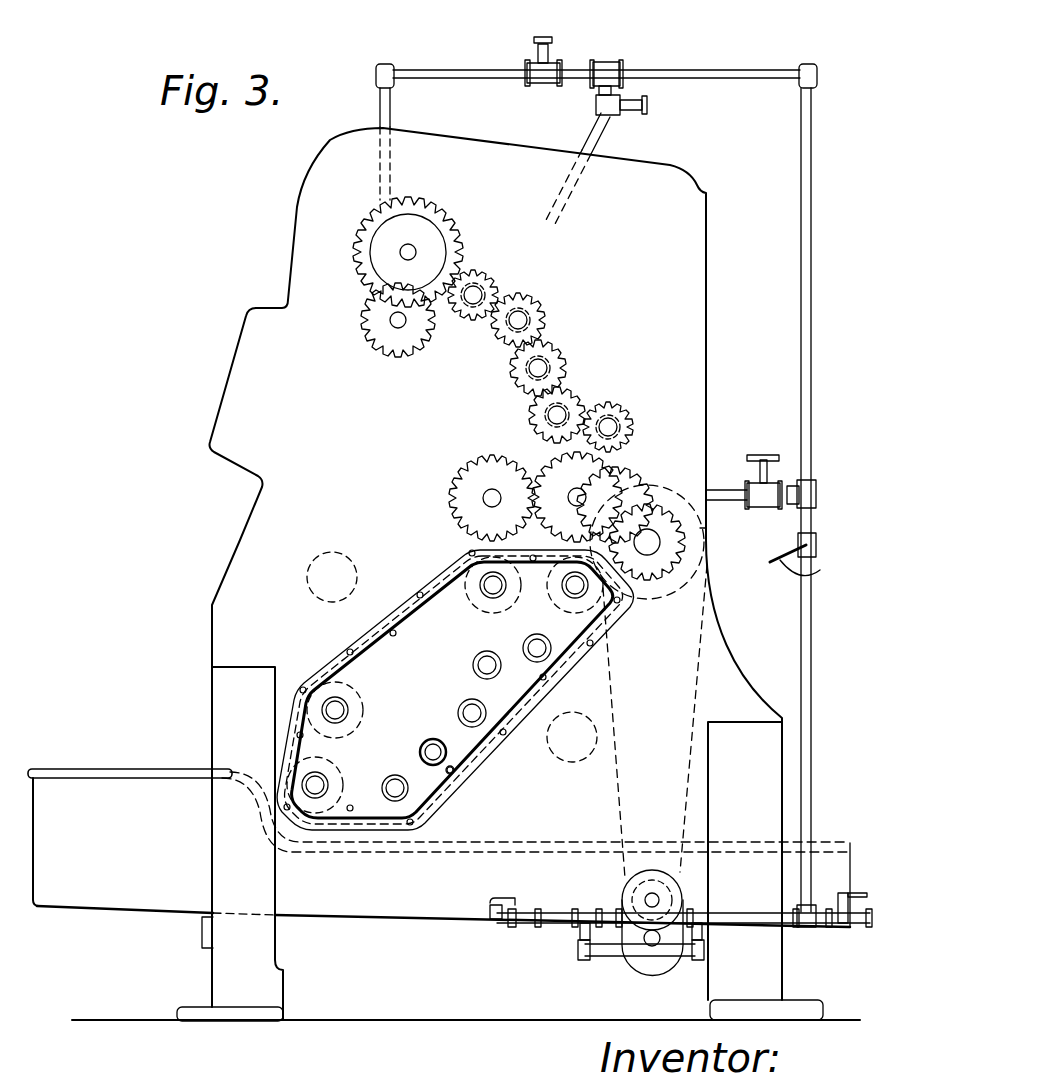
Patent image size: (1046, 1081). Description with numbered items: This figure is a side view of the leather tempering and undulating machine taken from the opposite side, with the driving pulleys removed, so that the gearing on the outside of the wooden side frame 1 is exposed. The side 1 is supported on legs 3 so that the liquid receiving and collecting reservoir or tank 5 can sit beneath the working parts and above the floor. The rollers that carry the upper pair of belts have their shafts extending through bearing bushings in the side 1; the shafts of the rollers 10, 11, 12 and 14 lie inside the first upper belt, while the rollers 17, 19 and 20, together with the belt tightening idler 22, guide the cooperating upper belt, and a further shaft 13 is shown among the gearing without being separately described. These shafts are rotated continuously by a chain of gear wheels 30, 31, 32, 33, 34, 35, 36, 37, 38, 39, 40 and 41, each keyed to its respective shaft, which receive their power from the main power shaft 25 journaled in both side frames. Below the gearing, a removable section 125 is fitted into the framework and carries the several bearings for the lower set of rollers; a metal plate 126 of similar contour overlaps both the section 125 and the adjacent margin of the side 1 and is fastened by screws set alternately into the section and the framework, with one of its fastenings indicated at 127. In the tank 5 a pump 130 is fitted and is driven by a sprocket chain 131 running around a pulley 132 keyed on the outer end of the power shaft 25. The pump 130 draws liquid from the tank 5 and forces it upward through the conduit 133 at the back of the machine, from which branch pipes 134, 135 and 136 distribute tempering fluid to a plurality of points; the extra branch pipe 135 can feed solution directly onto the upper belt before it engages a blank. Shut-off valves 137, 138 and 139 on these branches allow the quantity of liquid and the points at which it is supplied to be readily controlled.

The wooden side 1 is at (258, 428).
The leg 3 is at (255, 985).
The tank 5 is at (75, 795).
The roller shaft 10 is at (400, 248).
The roller shaft 11 is at (466, 310).
The roller shaft 12 is at (556, 362).
The shaft 13 is at (519, 321).
The roller shaft 14 is at (612, 420).
The roller 17 is at (392, 322).
The roller 19 is at (560, 408).
The roller 20 is at (490, 502).
The belt tightening idler 22 is at (577, 492).
The power shaft 25 is at (655, 548).
The gear wheel 30 is at (653, 517).
The gear wheel 31 is at (622, 470).
The gear wheel 32 is at (637, 426).
The gear wheel 33 is at (587, 403).
The gear wheel 34 is at (515, 380).
The gear wheel 35 is at (527, 300).
The gear wheel 36 is at (482, 270).
The gear wheel 37 is at (447, 215).
The gear wheel 38 is at (384, 262).
The gear wheel 39 is at (396, 350).
The gear wheel 40 is at (560, 480).
The gear wheel 41 is at (450, 497).
The removable section 125 is at (383, 672).
The plate 126 is at (373, 628).
The bolt 127 is at (455, 772).
The pump 130 is at (625, 916).
The sprocket chain 131 is at (696, 686).
The pulley 132 is at (732, 524).
The conduit 133 is at (830, 648).
The branch pipe 134 is at (724, 486).
The branch pipe 135 is at (603, 137).
The branch pipe 136 is at (378, 108).
The shut-off valve 137 is at (778, 456).
The shut-off valve 138 is at (550, 34).
The shut-off valve 139 is at (814, 550).